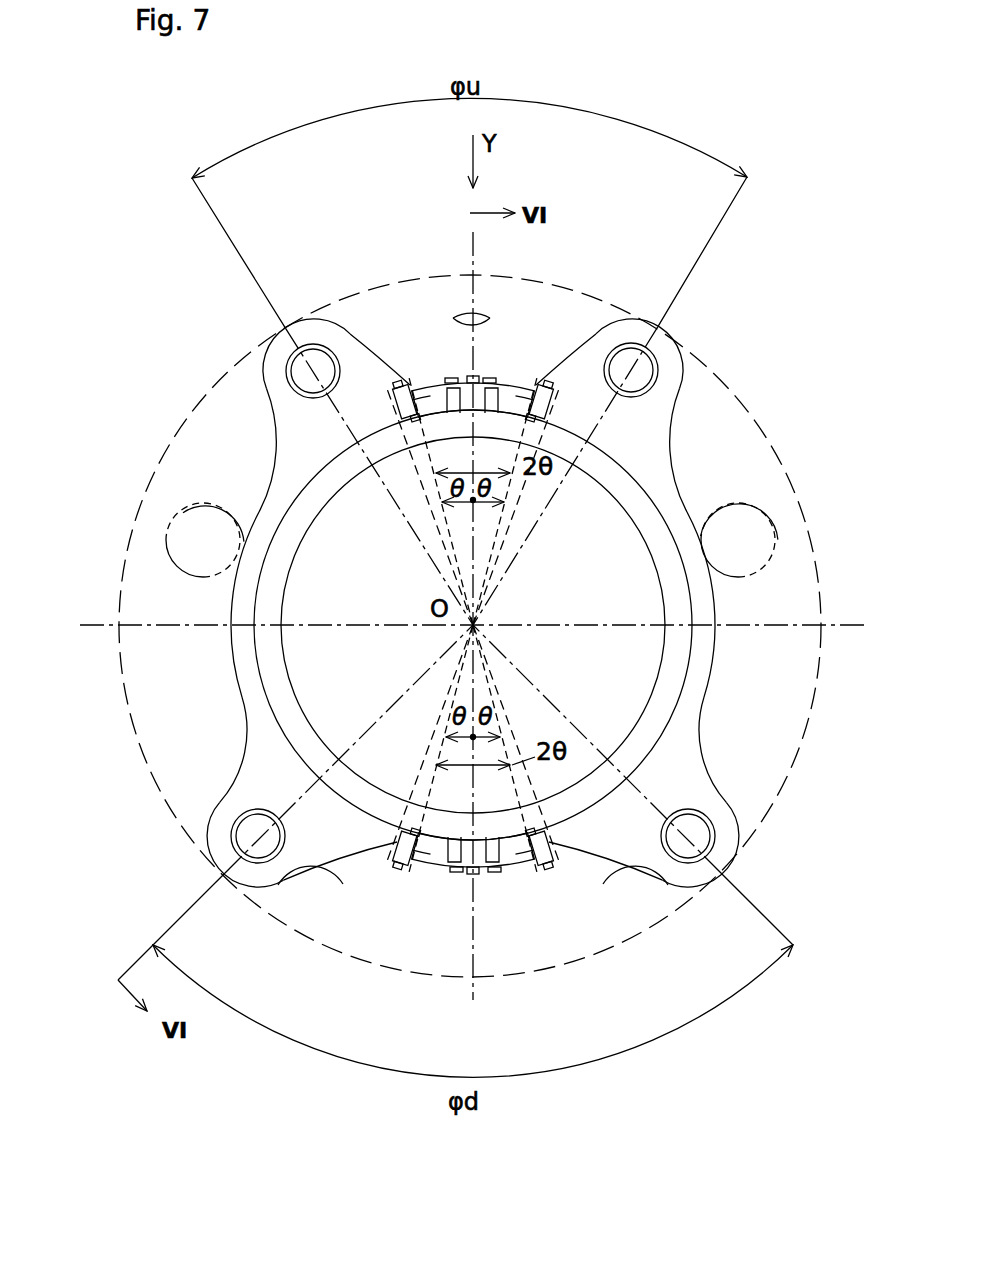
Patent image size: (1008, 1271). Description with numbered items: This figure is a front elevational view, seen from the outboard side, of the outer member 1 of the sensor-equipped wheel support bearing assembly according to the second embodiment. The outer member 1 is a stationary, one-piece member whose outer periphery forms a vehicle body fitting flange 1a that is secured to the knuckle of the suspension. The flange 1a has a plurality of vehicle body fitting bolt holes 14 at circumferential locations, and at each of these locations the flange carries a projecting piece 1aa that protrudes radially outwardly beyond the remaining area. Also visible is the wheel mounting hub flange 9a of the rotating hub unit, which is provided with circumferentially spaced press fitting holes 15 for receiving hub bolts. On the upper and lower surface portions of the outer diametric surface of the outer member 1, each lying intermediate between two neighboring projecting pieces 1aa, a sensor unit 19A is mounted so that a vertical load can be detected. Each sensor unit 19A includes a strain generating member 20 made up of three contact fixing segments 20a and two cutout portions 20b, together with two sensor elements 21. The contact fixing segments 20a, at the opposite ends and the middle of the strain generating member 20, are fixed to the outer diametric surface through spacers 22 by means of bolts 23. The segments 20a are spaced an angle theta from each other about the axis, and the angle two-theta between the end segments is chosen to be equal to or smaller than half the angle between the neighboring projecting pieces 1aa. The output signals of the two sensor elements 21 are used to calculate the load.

The outer member 1 is at (718, 435).
The vehicle body fitting flange 1a is at (717, 605).
The projecting pieces 1aa is at (356, 340).
The wheel mounting hub flange 9a is at (226, 376).
The vehicle body fitting bolt holes 14 is at (309, 344).
The press fitting holes 15 is at (455, 316).
The sensor unit 19A is at (496, 628).
The strain generating member 20 is at (428, 385).
The contact fixing segments 20a is at (399, 403).
The cutout portions 20b is at (489, 414).
The sensor elements 21 is at (450, 380).
The spacers 22 is at (538, 416).
The bolts 23 is at (406, 382).